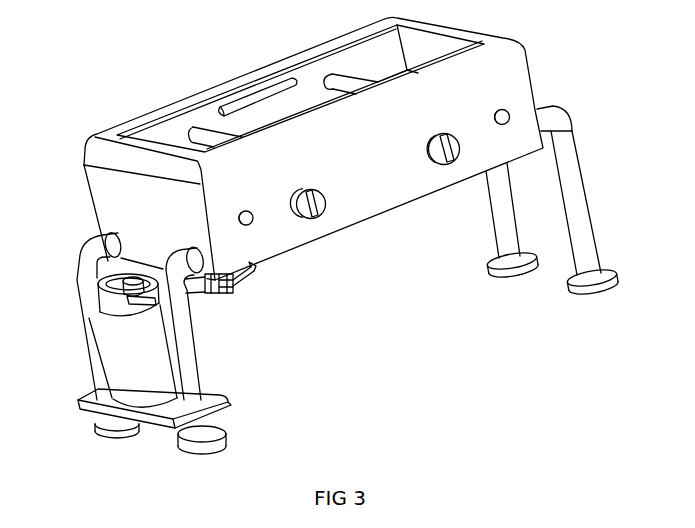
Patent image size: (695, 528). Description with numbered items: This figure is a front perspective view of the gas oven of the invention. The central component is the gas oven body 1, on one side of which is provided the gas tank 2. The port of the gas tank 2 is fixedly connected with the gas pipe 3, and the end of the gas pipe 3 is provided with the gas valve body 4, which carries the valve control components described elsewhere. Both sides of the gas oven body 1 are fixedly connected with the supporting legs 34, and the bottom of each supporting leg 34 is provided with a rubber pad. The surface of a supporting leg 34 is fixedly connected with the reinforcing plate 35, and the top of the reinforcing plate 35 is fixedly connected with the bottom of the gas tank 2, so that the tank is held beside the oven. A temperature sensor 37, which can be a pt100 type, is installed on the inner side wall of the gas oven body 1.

The gas oven body 1 is at (250, 256).
The gas tank 2 is at (128, 343).
The gas pipe 3 is at (102, 317).
The gas valve body 4 is at (218, 278).
The supporting legs 34 is at (510, 210).
The reinforcing plate 35 is at (82, 397).
The temperature sensor 37 is at (252, 95).